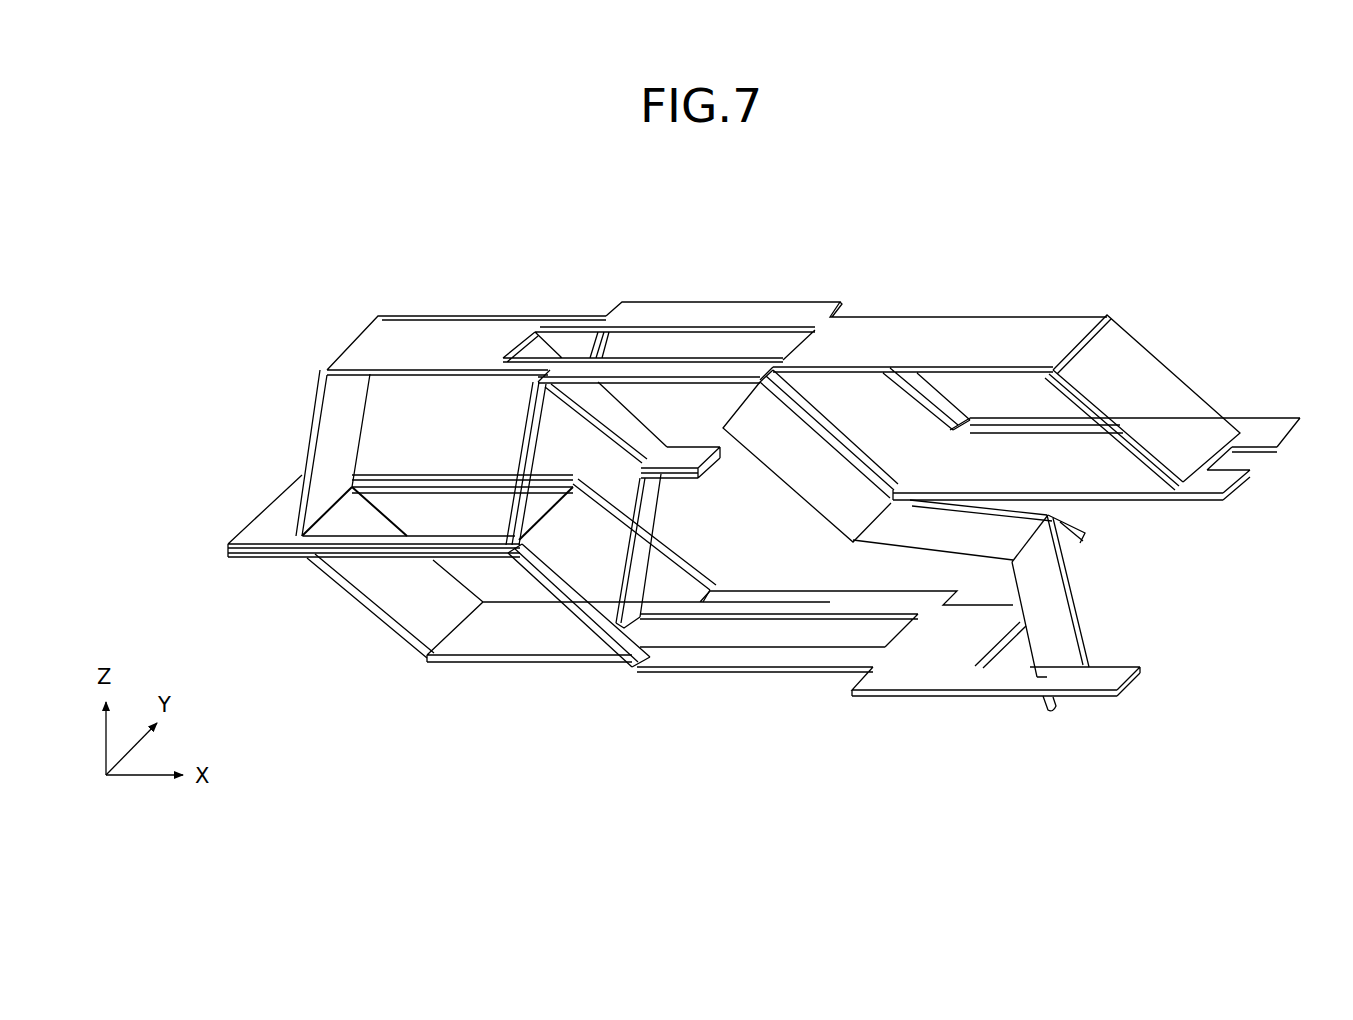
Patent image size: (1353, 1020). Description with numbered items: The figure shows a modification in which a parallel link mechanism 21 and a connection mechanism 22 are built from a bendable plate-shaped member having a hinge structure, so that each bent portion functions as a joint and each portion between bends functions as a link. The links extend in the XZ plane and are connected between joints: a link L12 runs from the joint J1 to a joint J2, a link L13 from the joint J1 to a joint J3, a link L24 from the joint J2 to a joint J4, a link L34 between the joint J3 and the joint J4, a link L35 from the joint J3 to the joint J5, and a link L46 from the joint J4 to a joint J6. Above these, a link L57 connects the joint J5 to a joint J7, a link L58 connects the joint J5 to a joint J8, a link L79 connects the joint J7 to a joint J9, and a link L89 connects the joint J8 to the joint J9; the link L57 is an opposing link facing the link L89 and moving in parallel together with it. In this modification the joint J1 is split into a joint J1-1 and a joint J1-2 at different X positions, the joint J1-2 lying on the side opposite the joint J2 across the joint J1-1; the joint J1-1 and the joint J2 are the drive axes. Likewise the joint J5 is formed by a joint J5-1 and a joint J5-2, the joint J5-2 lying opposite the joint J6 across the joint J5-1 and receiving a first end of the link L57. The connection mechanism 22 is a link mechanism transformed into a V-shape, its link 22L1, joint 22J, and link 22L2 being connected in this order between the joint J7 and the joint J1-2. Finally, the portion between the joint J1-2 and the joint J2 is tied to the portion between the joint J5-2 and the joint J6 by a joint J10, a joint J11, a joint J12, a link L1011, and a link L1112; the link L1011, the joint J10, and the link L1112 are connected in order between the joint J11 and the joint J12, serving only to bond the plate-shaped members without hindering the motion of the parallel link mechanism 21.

The parallel link mechanism 21 is at (372, 220).
The joint J6 is at (331, 362).
The joint J12 is at (513, 346).
The joint J5-1 is at (544, 371).
The link L1112 is at (620, 440).
The joint J11 is at (643, 462).
The joint J5-2 is at (759, 375).
The link L57 is at (816, 418).
The joint J7 is at (903, 478).
The link L79 is at (937, 495).
The link L58 is at (997, 365).
The joint J8 is at (1051, 368).
The link L89 is at (1125, 433).
The joint J9 is at (1187, 479).
The link L46 is at (310, 430).
The link L35 is at (527, 427).
The joint J3 is at (503, 545).
The joint J4 is at (295, 536).
The link L34 is at (387, 550).
The link L24 is at (368, 615).
The joint J2 is at (424, 661).
The link L12 is at (478, 666).
The link L13 is at (562, 612).
The joint J1-1 is at (638, 671).
The link L1011 is at (626, 592).
The joint J10 is at (641, 628).
The joint J1-2 is at (1070, 667).
The link 22L1 is at (1060, 521).
The joint 22J is at (1070, 533).
The link 22L2 is at (1072, 587).
The connection mechanism 22 is at (1246, 508).